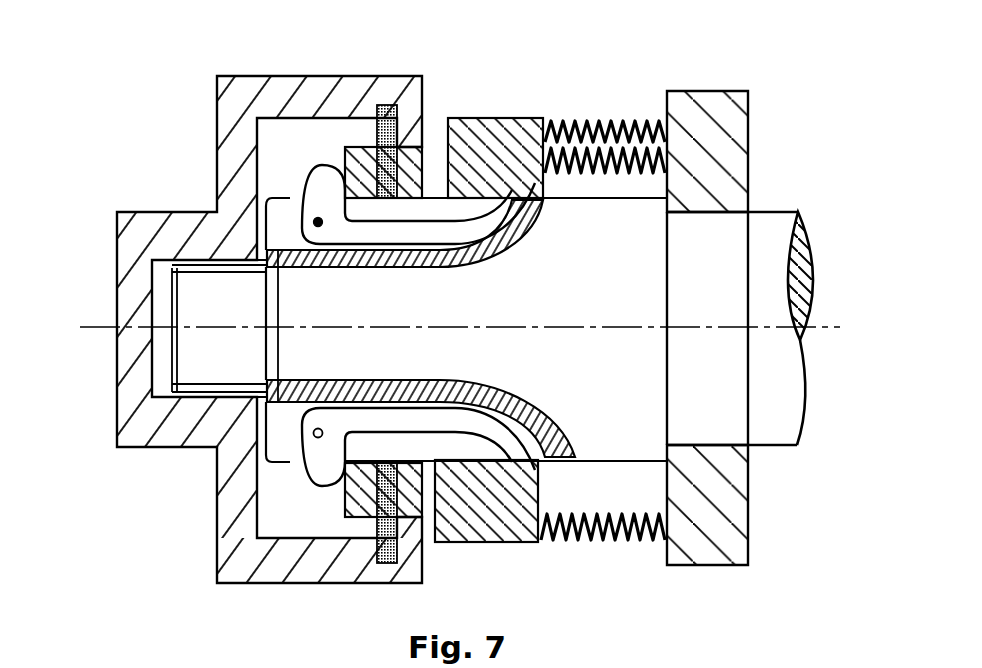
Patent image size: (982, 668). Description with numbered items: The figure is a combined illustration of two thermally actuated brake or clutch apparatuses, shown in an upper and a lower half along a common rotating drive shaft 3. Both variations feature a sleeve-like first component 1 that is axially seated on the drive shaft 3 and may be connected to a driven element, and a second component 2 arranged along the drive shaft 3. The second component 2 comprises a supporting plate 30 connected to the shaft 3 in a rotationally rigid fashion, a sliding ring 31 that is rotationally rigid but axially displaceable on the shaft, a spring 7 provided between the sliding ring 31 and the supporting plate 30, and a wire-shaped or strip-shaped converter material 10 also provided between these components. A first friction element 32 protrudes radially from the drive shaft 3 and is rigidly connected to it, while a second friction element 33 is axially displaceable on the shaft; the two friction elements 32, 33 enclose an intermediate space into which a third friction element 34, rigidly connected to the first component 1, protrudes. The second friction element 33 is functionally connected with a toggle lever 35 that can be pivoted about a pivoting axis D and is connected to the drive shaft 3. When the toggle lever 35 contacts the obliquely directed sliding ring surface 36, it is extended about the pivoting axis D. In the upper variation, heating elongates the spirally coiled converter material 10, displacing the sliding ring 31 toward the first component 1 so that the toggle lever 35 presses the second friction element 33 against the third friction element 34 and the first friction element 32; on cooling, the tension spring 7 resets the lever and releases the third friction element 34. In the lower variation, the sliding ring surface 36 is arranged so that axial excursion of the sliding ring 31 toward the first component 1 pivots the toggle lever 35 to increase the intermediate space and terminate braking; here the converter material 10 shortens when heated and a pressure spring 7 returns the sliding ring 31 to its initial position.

The first component 1 is at (154, 200).
The second component 2 is at (763, 472).
The drive shaft 3 is at (812, 280).
The spring 7 is at (593, 120).
The converter material 10 is at (617, 150).
The supporting plate 30 is at (725, 170).
The sliding ring 31 is at (510, 120).
The first friction element 32 is at (422, 123).
The second friction element 33 is at (347, 150).
The third friction element 34 is at (375, 103).
The toggle lever 35 is at (323, 198).
The sliding ring surface 36 is at (538, 440).
The pivoting axis D is at (322, 226).